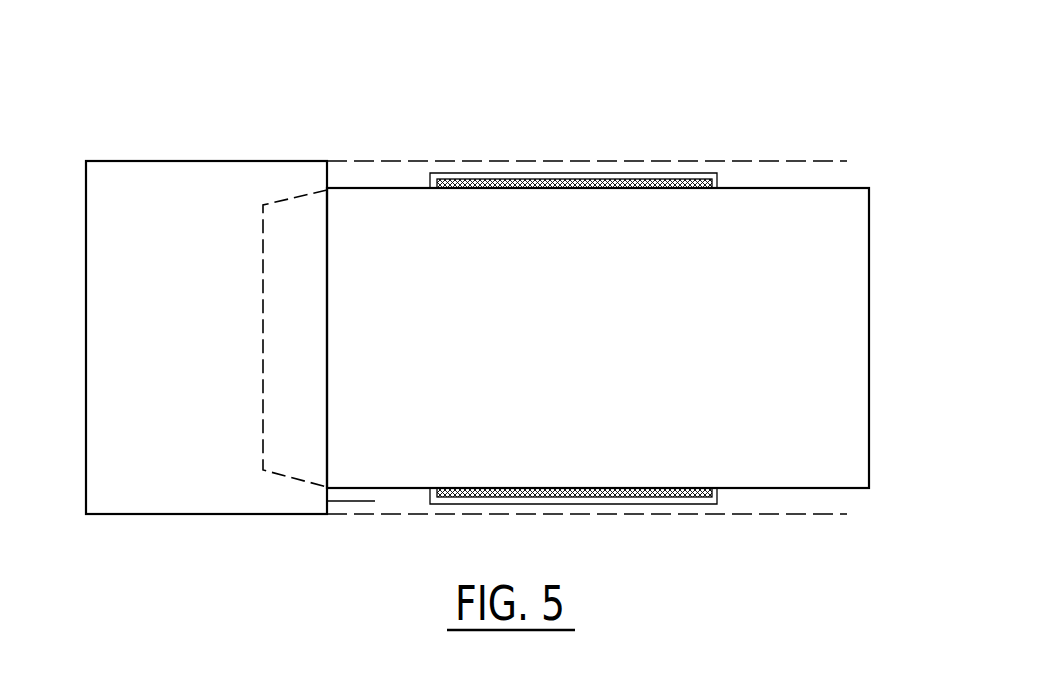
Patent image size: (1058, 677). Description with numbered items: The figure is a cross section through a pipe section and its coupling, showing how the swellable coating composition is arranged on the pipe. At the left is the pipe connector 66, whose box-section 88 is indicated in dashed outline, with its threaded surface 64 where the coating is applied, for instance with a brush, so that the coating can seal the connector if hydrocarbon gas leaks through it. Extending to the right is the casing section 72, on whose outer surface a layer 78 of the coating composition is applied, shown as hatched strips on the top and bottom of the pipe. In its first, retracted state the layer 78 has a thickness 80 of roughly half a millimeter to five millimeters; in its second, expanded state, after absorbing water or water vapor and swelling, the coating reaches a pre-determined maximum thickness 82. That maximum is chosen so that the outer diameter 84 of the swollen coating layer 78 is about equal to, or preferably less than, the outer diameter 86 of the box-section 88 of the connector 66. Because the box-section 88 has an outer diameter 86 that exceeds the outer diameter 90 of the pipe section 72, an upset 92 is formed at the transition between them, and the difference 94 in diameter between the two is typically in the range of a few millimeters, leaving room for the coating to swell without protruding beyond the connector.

The pipe connector 66 is at (233, 125).
The box-section 88 is at (257, 180).
The threaded surface 64 is at (307, 156).
The casing section 72 is at (710, 385).
The coating layer 78 is at (563, 173).
The difference in diameter 94 is at (413, 93).
The pre-determined maximum thickness 82 is at (624, 103).
The thickness 80 is at (682, 110).
The outer diameter of the swollen coating layer 84 is at (467, 210).
The outer diameter of the pipe section 90 is at (824, 466).
The outer diameter of the box-section 86 is at (136, 183).
The upset 92 is at (375, 501).